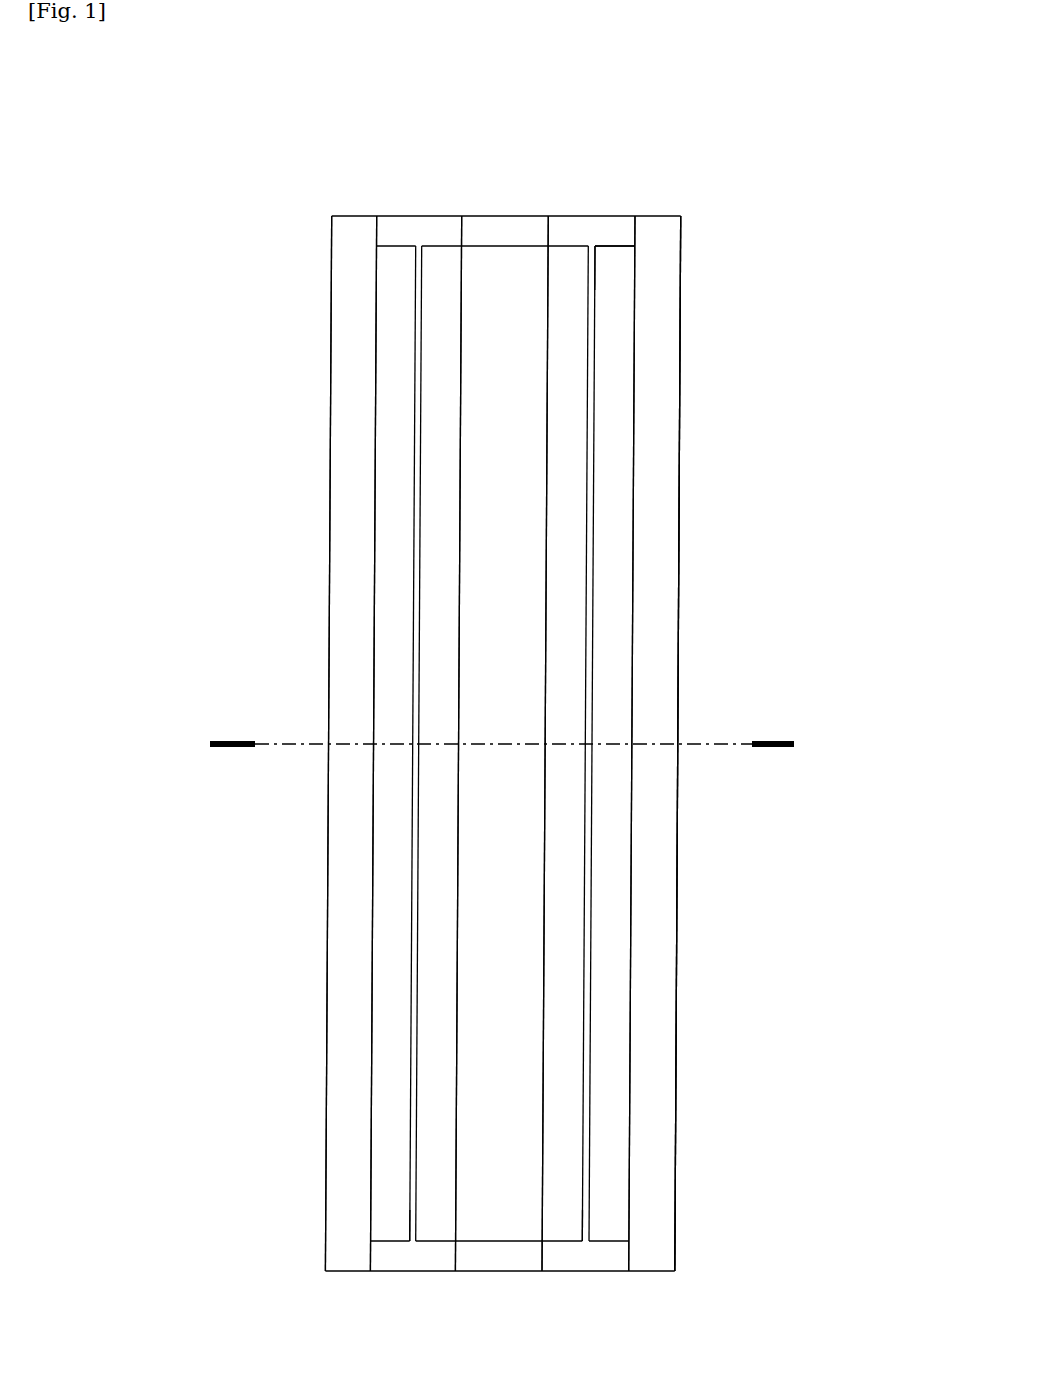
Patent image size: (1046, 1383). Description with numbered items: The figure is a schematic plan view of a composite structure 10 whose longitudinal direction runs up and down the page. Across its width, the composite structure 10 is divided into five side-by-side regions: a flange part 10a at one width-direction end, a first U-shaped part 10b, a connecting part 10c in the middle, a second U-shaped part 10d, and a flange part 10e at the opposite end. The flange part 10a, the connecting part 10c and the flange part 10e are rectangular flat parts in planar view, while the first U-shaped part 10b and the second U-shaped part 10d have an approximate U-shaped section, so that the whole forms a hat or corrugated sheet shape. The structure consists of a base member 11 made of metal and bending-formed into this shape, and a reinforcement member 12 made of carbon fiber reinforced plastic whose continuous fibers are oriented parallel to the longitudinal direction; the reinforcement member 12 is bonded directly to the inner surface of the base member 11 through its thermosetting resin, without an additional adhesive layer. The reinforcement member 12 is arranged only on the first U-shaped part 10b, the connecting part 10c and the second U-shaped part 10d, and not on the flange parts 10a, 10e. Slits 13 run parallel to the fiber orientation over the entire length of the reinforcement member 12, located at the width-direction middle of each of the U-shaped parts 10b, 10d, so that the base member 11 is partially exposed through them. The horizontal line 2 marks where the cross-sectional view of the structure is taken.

The composite structure 10 is at (846, 170).
The flange part 10a is at (665, 211).
The first U-shaped part 10b is at (571, 213).
The connecting part 10c is at (499, 213).
The second U-shaped part 10d is at (410, 213).
The flange part 10e is at (350, 211).
The base member 11 is at (673, 424).
The reinforcement member 12 is at (610, 242).
The slits 13 is at (410, 1238).
The line 2- 2 is at (232, 744).